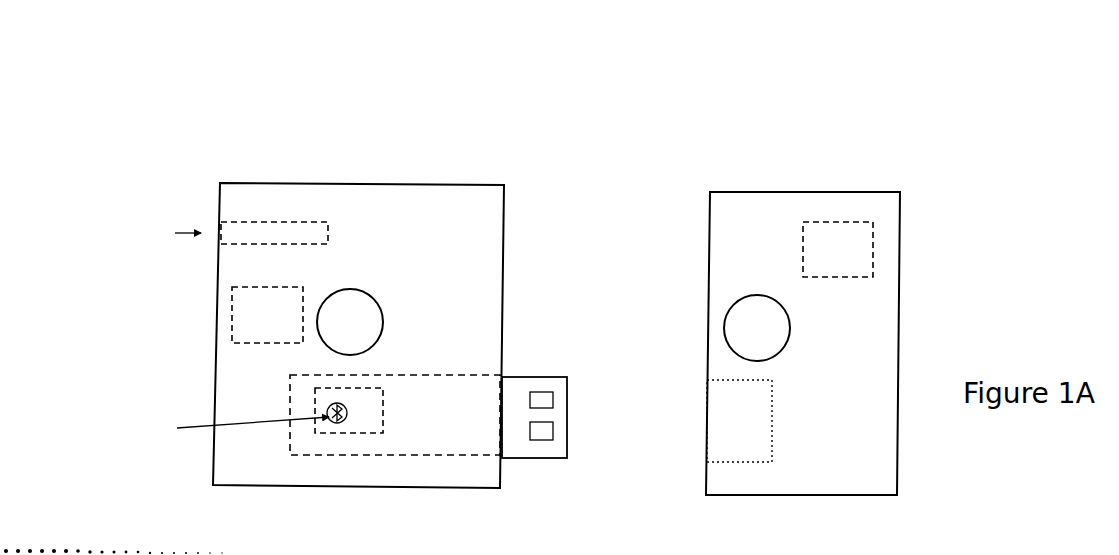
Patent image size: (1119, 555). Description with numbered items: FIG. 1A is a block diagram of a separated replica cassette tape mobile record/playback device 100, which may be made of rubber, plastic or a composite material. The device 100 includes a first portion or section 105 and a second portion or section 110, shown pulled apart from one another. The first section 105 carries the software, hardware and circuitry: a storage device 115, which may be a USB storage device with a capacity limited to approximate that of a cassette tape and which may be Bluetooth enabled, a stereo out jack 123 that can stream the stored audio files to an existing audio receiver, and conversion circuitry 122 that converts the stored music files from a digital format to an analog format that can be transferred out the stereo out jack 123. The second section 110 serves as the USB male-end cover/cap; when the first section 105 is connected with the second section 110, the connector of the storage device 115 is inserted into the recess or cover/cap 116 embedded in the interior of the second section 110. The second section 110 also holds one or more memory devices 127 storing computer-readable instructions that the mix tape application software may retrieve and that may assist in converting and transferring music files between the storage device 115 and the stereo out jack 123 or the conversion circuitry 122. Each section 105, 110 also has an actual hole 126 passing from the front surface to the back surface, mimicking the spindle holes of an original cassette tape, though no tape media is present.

The replica cassette tape mobile record/playback device 100 is at (560, 84).
The first portion or section 105 is at (390, 355).
The second portion or section 110 is at (803, 360).
The storage device 115 is at (395, 415).
The recess or cover/cap 116 is at (739, 421).
The conversion circuitry 122 is at (267, 315).
The stereo out jack 123 is at (274, 233).
The holes 126 is at (553, 325).
The memory devices 127 is at (838, 249).